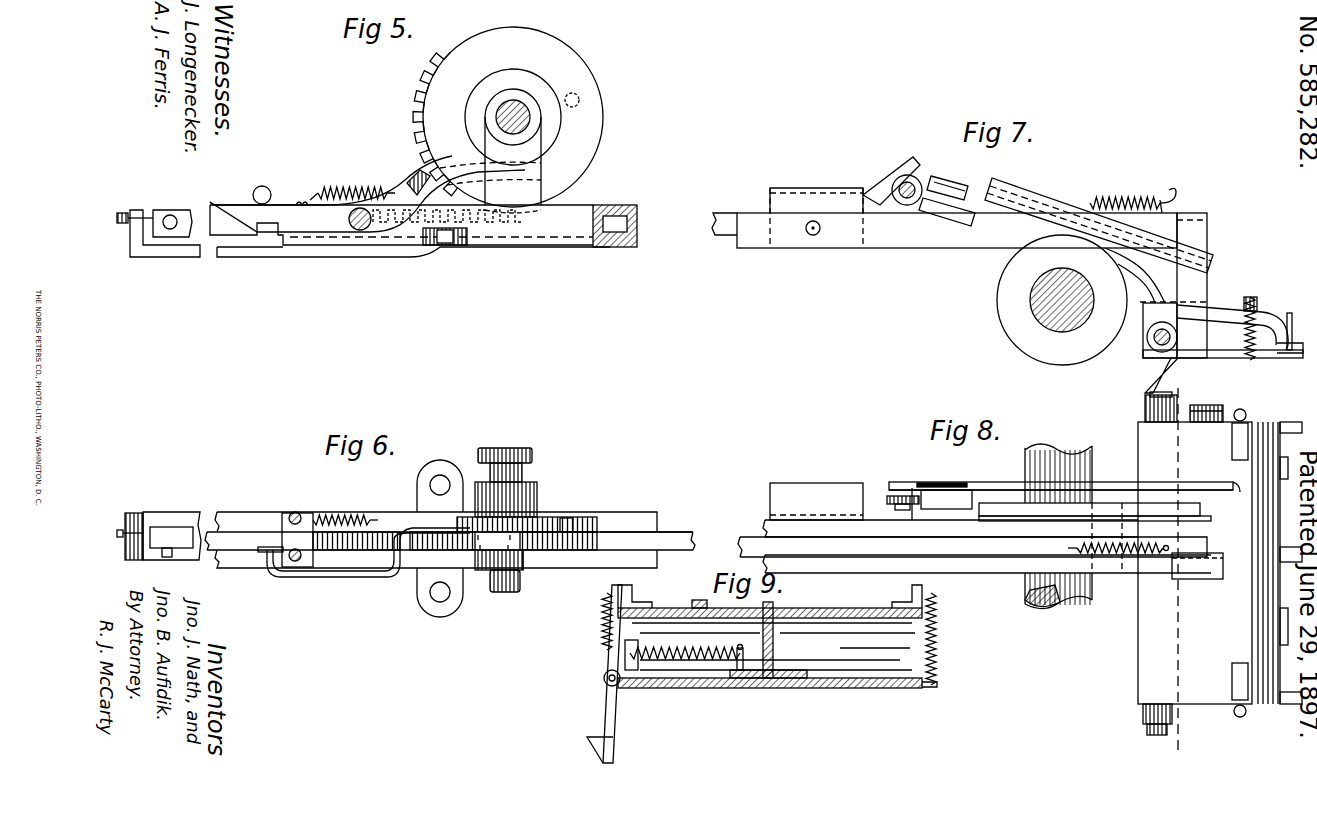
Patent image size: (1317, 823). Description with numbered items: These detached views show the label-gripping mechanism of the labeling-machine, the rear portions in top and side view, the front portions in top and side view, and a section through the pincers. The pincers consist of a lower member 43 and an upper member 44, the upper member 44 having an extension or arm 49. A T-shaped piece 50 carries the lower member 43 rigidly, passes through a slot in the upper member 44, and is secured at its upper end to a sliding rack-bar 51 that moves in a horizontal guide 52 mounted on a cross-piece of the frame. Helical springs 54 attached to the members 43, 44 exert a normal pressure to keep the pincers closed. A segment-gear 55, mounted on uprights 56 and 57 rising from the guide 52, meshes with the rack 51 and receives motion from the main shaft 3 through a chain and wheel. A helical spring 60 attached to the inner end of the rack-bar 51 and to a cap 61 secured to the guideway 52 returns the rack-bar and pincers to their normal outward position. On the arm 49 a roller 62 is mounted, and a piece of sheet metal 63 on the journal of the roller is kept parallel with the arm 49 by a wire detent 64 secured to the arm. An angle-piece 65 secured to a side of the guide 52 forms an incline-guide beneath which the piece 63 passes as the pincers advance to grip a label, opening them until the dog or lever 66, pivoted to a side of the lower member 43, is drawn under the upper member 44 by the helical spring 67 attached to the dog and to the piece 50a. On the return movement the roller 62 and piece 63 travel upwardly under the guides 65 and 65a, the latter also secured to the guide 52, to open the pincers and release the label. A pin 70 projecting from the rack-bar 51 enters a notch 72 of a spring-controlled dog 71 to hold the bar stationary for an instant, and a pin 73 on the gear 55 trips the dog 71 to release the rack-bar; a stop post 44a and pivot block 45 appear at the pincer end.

In FIG. 7, the main shaft 3 is at (1060, 333).
In FIG. 8, the main shaft 3 is at (1058, 526).
In FIG. 7, the lower member of the pincers 43 is at (1235, 358).
In FIG. 9, the lower member of the pincers 43 is at (874, 688).
In FIG. 7, the upper member of the pincers 44 is at (1225, 308).
In FIG. 8, the upper member of the pincers 44 is at (1220, 571).
In FIG. 9, the upper member of the pincers 44 is at (838, 608).
In FIG. 7, the stop post 44a is at (1290, 313).
In FIG. 7, the pivot block 45 is at (1146, 343).
In FIG. 7, the arm 49 is at (1140, 282).
In FIG. 8, the arm 49 is at (1112, 490).
In FIG. 9, the T-shaped piece 50 is at (774, 654).
In FIG. 9, the piece 50a is at (740, 647).
In FIG. 5, the sliding rack-bar 51 is at (429, 226).
In FIG. 6, the sliding rack-bar 51 is at (646, 540).
In FIG. 7, the sliding rack-bar 51 is at (713, 225).
In FIG. 8, the sliding rack-bar 51 is at (972, 547).
In FIG. 5, the horizontal guide 52 is at (401, 225).
In FIG. 6, the horizontal guide 52 is at (580, 568).
In FIG. 7, the horizontal guide 52 is at (972, 218).
In FIG. 8, the horizontal guide 52 is at (988, 573).
In FIG. 7, the helical springs 54 is at (1242, 337).
In FIG. 9, the helical springs 54 is at (603, 622).
In FIG. 5, the segment-gear 55 is at (508, 117).
In FIG. 5, the upright 56 is at (490, 165).
In FIG. 6, the upright 56 is at (556, 504).
In FIG. 6, the upright 57 is at (522, 562).
In FIG. 5, the helical spring 60 is at (350, 187).
In FIG. 6, the helical spring 60 is at (346, 514).
In FIG. 7, the helical spring 60 is at (1130, 198).
In FIG. 8, the helical spring 60 is at (1110, 545).
In FIG. 6, the cap 61 is at (297, 539).
In FIG. 7, the roller 62 is at (895, 198).
In FIG. 8, the roller 62 is at (912, 510).
In FIG. 7, the piece of sheet metal 63 is at (945, 222).
In FIG. 8, the piece of sheet metal 63 is at (946, 499).
In FIG. 7, the wire detent 64 is at (950, 178).
In FIG. 8, the wire detent 64 is at (944, 482).
In FIG. 7, the angle-piece 65 is at (1040, 200).
In FIG. 8, the angle-piece 65 is at (1015, 510).
In FIG. 7, the guide 65a is at (897, 170).
In FIG. 8, the guide 65a is at (874, 485).
In FIG. 7, the dog or lever 66 is at (1150, 380).
In FIG. 9, the dog or lever 66 is at (612, 712).
In FIG. 9, the helical spring 67 is at (696, 649).
In FIG. 5, the pin 70 is at (170, 215).
In FIG. 6, the pin 70 is at (167, 560).
In FIG. 5, the spring-controlled dog 71 is at (367, 194).
In FIG. 6, the spring-controlled dog 71 is at (292, 577).
In FIG. 5, the notch 72 is at (268, 232).
In FIG. 5, the pin 73 is at (572, 107).
In FIG. 6, the pin 73 is at (571, 518).